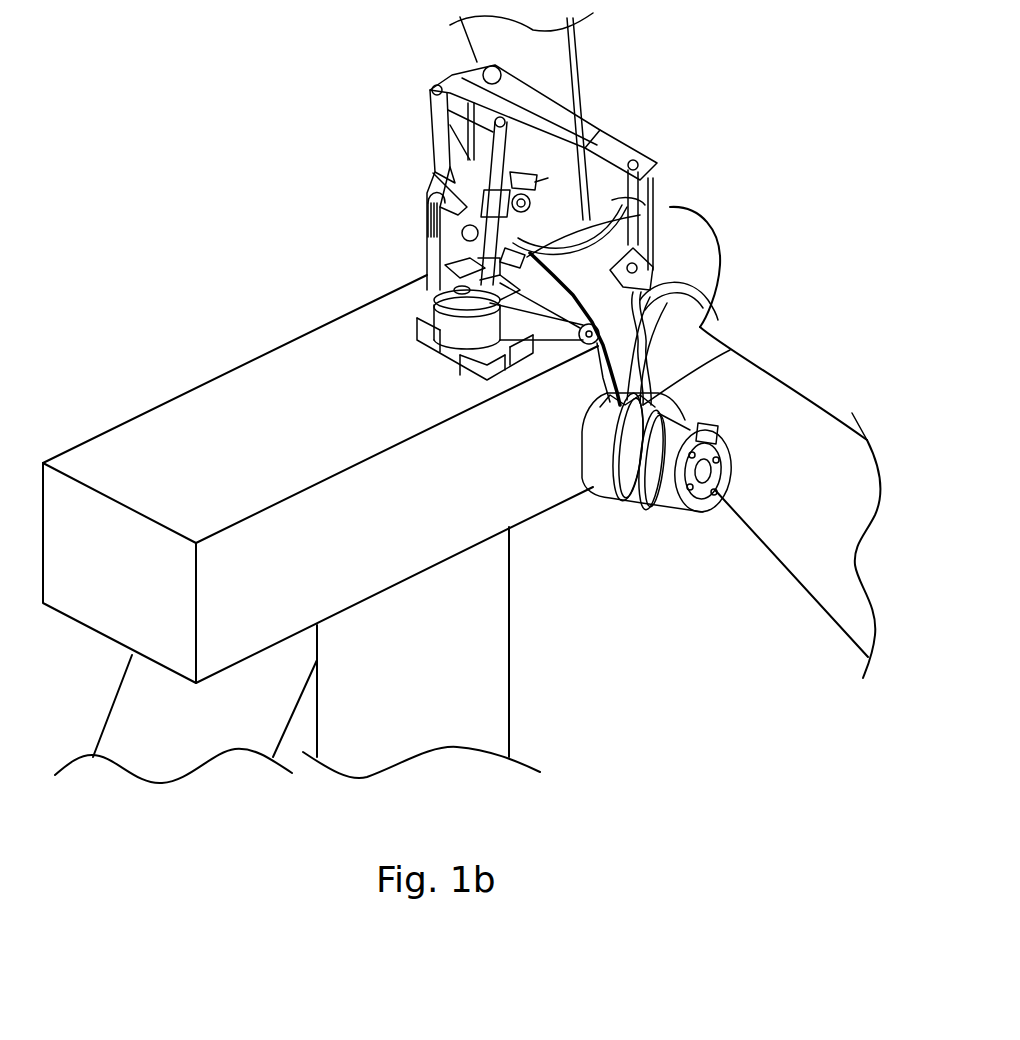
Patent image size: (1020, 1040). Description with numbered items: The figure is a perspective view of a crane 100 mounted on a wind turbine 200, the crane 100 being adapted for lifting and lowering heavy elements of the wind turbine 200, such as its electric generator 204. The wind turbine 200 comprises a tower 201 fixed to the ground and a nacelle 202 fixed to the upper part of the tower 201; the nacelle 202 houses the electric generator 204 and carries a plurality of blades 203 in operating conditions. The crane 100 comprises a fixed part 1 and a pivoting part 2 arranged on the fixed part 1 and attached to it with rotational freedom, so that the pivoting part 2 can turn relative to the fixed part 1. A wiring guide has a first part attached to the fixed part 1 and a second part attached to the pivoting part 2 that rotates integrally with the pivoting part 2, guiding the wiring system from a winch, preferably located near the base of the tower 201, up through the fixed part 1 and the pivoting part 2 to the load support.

The crane 100 is at (628, 108).
The wind turbine 200 is at (338, 138).
The tower 201 is at (487, 593).
The nacelle 202 is at (250, 637).
The blades 203 is at (778, 403).
The electric generator 204 is at (628, 487).
The fixed part 1 is at (413, 287).
The pivoting part 2 is at (412, 229).